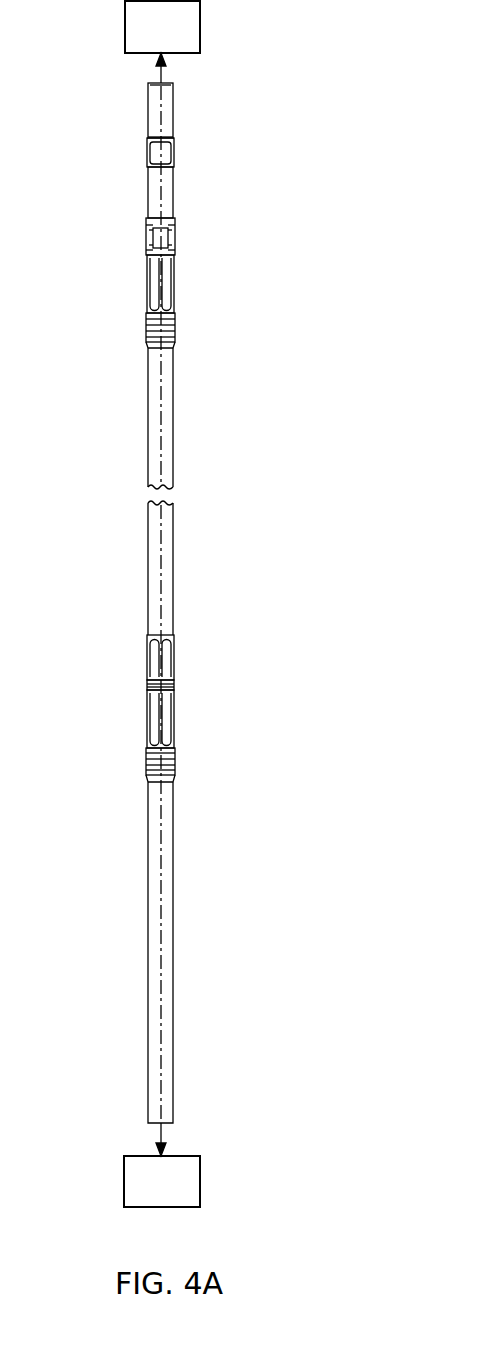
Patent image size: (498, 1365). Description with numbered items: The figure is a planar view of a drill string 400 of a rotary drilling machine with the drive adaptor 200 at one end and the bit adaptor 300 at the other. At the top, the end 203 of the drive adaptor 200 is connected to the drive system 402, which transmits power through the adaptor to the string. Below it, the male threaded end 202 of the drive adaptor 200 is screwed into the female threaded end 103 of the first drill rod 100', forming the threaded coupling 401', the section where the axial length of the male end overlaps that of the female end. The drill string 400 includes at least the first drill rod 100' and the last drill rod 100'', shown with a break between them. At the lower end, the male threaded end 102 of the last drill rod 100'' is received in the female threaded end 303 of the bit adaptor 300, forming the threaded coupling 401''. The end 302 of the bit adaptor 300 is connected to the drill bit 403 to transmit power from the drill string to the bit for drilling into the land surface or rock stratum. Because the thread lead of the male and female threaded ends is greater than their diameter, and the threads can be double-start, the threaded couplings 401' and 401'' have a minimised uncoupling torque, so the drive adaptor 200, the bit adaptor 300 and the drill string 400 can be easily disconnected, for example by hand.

The drive system 402 is at (162, 42).
The end connected to the drive unit 203 is at (164, 100).
The drive adaptor 200 is at (148, 187).
The male threaded end 202 is at (153, 268).
The threaded coupling 401' is at (208, 283).
The female threaded end 103 is at (176, 330).
The first drill rod 100' is at (103, 418).
The drill string 400 is at (216, 500).
The last drill rod 100'' is at (103, 568).
The male threaded end 102 is at (167, 662).
The female threaded end 303 is at (153, 702).
The threaded coupling 401'' is at (211, 713).
The bit adaptor 300 is at (148, 910).
The end connected to the drill bit 302 is at (153, 1110).
The drill bit 403 is at (162, 1165).